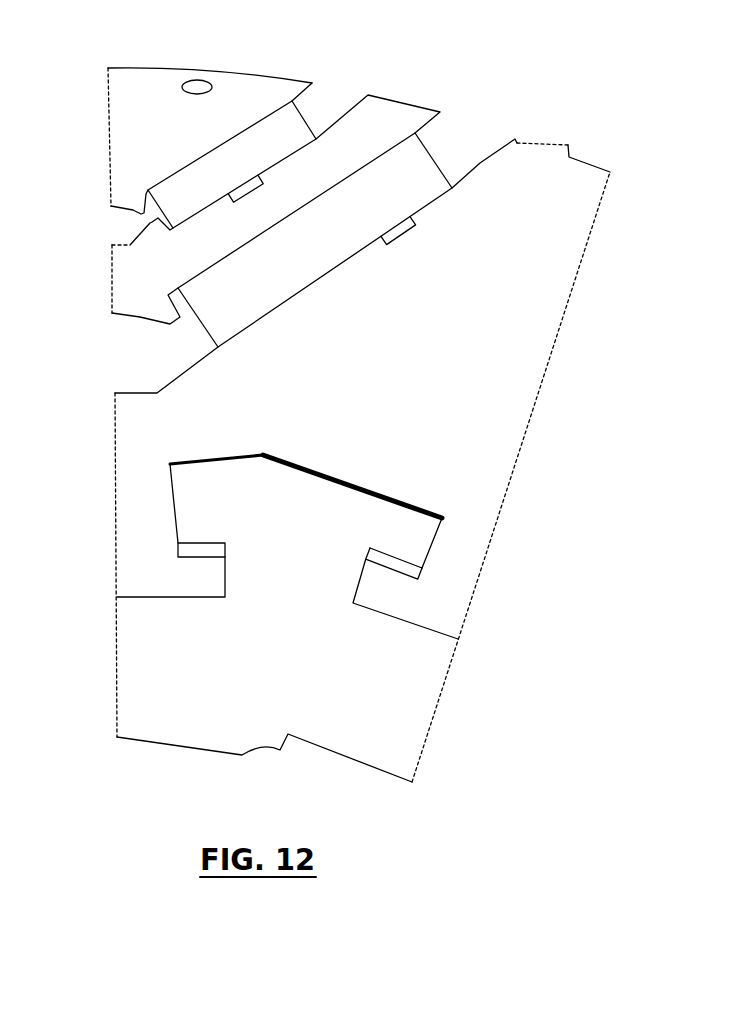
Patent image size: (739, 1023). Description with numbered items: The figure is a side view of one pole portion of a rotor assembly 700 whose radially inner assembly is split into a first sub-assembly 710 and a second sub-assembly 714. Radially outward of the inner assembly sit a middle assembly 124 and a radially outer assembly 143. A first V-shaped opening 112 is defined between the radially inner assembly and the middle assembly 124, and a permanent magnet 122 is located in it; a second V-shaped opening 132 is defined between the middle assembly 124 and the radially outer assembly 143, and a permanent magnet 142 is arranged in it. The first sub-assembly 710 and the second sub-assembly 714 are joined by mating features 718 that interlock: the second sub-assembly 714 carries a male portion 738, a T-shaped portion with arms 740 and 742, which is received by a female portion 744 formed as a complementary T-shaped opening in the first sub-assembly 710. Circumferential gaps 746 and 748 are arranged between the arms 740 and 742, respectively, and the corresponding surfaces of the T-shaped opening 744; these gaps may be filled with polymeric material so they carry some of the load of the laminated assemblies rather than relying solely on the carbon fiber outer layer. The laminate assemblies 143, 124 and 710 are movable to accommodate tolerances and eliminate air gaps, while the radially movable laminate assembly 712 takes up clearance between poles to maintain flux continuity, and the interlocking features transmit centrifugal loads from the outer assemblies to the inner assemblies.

The power module assembly 700 is at (453, 62).
The radially outer assembly 143 is at (107, 140).
The permanent magnet 142 is at (298, 108).
The second V-shaped opening 132 is at (95, 239).
The middle assembly 124 is at (103, 293).
The permanent magnet 122 is at (428, 148).
The first V-shaped opening 112 is at (86, 368).
The first sub-assembly 710 is at (110, 462).
The radially movable laminate assembly 712 is at (533, 373).
The second sub-assembly 714 is at (112, 665).
The mating features 718 is at (393, 438).
The male portion 738 is at (244, 488).
The arm 740 is at (174, 530).
The arm 742 is at (406, 543).
The female portion 744 is at (425, 512).
The circumferential gap 746 is at (200, 550).
The circumferential gap 748 is at (405, 566).